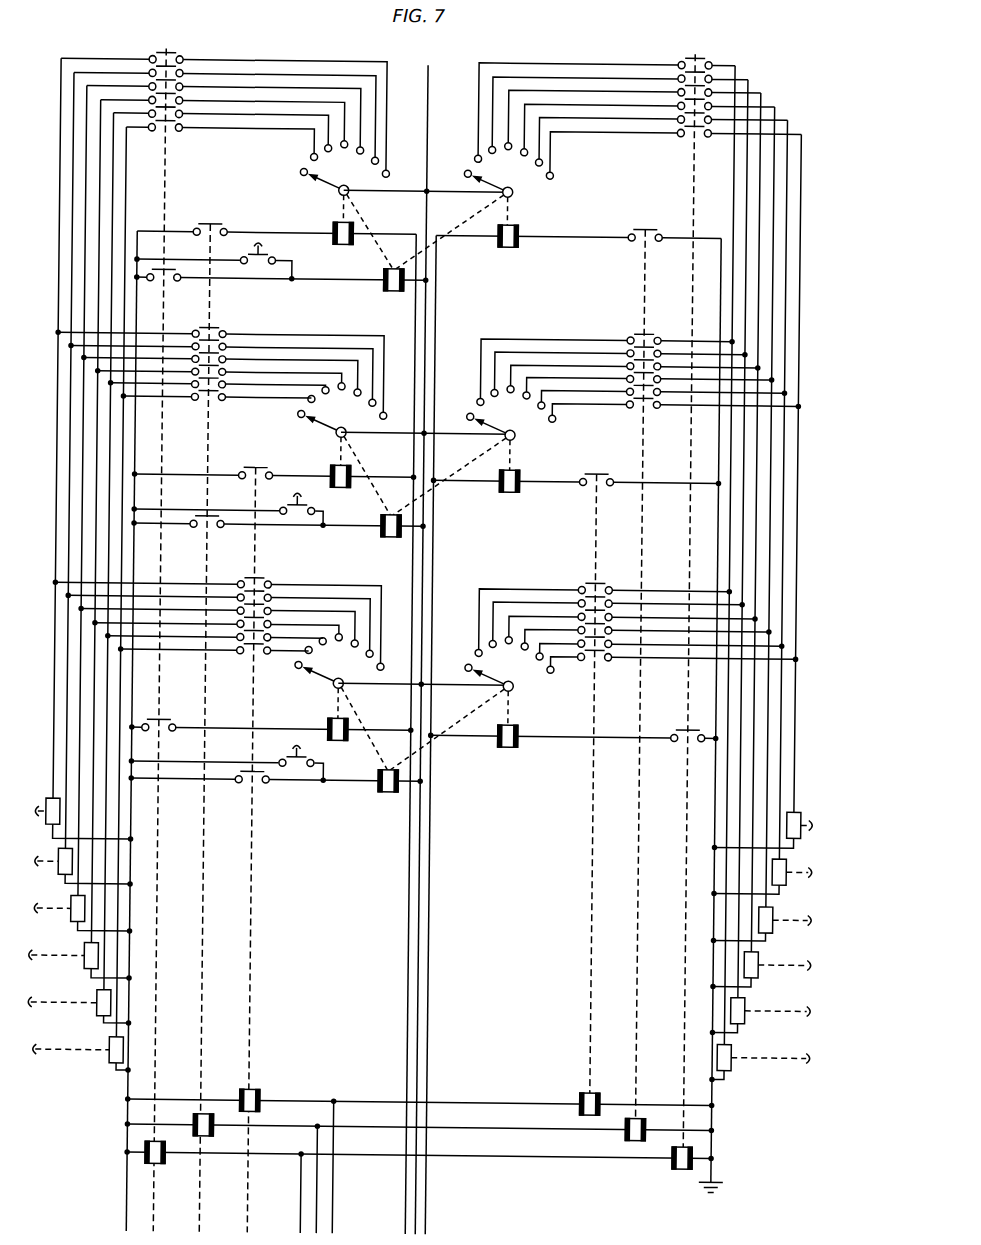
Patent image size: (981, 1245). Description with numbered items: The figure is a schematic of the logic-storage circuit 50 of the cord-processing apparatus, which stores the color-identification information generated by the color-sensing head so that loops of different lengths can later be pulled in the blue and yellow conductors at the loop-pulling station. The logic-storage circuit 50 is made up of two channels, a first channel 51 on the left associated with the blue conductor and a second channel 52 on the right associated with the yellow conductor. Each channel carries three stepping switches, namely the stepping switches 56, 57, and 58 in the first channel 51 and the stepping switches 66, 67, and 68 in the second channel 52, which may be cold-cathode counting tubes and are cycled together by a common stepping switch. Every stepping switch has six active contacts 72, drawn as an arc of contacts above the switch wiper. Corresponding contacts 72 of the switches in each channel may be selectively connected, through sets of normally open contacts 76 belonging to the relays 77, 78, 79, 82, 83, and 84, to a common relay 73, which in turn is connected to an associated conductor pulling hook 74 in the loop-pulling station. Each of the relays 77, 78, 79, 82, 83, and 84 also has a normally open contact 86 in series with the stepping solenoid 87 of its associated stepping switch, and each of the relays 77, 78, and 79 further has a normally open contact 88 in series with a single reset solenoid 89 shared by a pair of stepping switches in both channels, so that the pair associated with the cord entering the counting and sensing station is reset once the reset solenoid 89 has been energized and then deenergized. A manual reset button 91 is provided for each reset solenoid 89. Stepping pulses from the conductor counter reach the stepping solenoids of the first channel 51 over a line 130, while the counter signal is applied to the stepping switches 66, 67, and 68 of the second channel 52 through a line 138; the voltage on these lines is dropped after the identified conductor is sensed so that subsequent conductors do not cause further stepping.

The logic-storage circuit 50 is at (757, 76).
The channel 51 is at (227, 45).
The channel 52 is at (601, 52).
The stepping switch 56 is at (334, 200).
The stepping switch 57 is at (334, 442).
The stepping switch 58 is at (334, 693).
The stepping switch 66 is at (510, 200).
The stepping switch 67 is at (513, 442).
The stepping switch 68 is at (513, 695).
The active contacts 72 is at (370, 167).
The common relay 73 is at (113, 1045).
The conductor pulling hook 74 is at (36, 964).
The normally open contacts 76 is at (160, 49).
The relay 77 is at (215, 1139).
The relay 78 is at (262, 1092).
The relay 79 is at (166, 1167).
The relay 82 is at (631, 1139).
The relay 83 is at (585, 1092).
The relay 84 is at (678, 1167).
The normally open contact 86 is at (212, 226).
The stepping solenoid 87 is at (331, 248).
The normally open contact 88 is at (160, 285).
The reset solenoid 89 is at (385, 292).
The manual reset button 91 is at (268, 257).
The line 130 is at (412, 870).
The line 138 is at (432, 878).